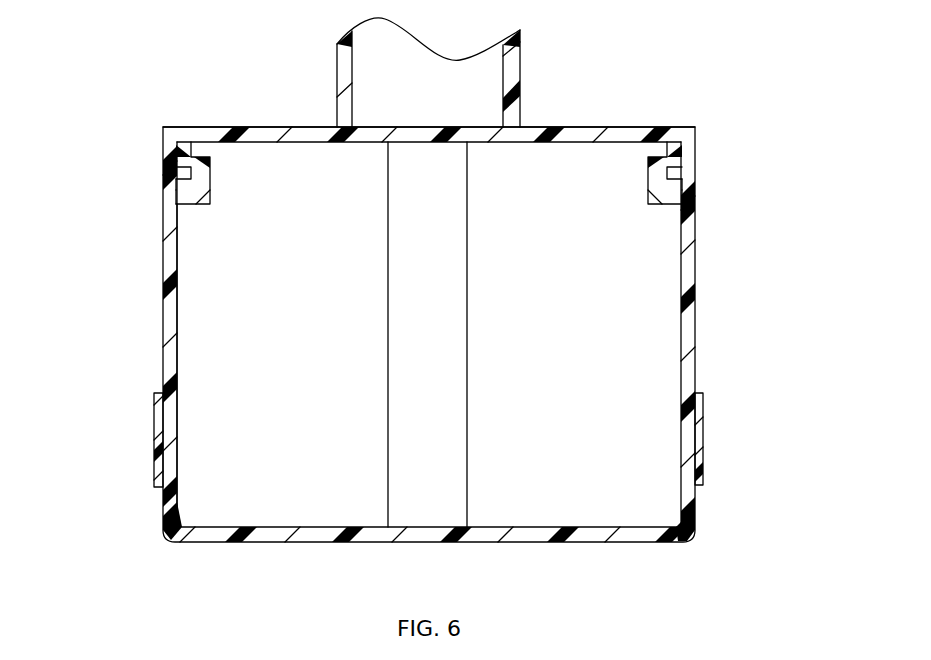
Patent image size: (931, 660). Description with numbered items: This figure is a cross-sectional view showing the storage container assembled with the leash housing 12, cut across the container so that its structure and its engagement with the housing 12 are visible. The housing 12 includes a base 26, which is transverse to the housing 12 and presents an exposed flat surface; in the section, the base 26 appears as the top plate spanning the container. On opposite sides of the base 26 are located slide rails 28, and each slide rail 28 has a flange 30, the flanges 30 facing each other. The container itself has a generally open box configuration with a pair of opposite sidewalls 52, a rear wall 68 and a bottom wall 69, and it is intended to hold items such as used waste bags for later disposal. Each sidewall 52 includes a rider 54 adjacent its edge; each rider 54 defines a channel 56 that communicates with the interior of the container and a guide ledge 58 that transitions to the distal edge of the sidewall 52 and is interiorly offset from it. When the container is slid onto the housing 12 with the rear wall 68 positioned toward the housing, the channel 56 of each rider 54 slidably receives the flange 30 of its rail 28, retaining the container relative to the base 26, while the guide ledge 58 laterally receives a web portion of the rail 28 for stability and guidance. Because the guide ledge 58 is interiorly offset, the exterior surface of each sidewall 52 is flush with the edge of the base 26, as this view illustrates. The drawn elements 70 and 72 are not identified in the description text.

The housing 12 is at (328, 50).
The base 26 is at (253, 127).
The slide rail 28 is at (165, 153).
The flange 30 is at (192, 166).
The sidewall 52 is at (165, 320).
The rider 54 is at (210, 193).
The channel 56 is at (205, 181).
The guide ledge 58 is at (193, 151).
The rear wall 68 is at (205, 262).
The bottom wall 69 is at (272, 545).
The divider 70 is at (420, 405).
The handle 72 is at (156, 440).